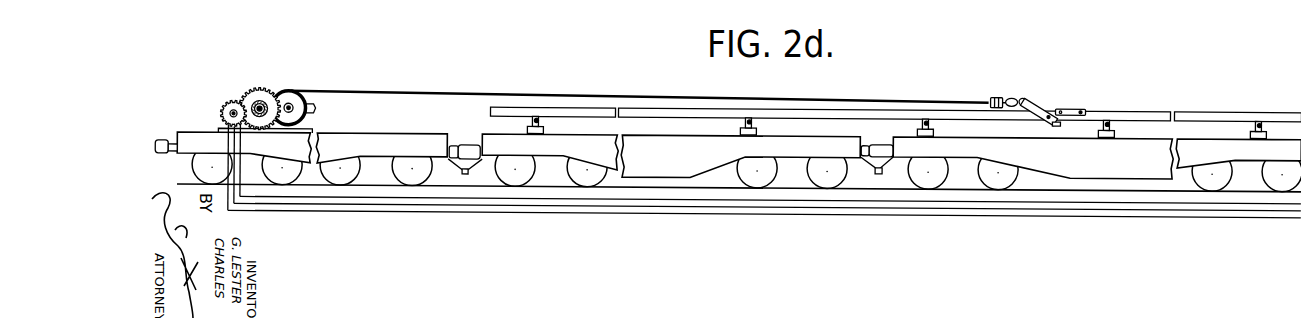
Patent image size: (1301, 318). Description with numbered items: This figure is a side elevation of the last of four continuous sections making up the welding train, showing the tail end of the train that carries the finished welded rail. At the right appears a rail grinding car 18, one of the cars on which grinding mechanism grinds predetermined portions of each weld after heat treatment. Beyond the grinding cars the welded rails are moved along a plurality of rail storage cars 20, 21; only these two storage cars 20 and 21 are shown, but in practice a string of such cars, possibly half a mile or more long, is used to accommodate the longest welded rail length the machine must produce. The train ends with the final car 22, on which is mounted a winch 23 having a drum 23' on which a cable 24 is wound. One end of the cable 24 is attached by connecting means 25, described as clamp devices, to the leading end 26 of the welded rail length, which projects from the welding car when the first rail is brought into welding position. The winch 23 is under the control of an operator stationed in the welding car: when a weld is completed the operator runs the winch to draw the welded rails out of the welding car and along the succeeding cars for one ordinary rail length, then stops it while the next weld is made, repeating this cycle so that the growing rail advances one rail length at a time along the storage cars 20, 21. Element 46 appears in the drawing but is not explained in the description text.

The rail grinding car 18 is at (1287, 139).
The rail storage car 20 is at (1135, 160).
The rail storage car 21 is at (598, 152).
The final car 22 is at (390, 137).
The winch 23 is at (259, 94).
The drum 23' is at (296, 94).
The cable 24 is at (379, 94).
The connecting means 25 is at (1040, 99).
The leading end of the welded rail length 26 is at (1067, 106).
The pinion gear 46 is at (226, 100).